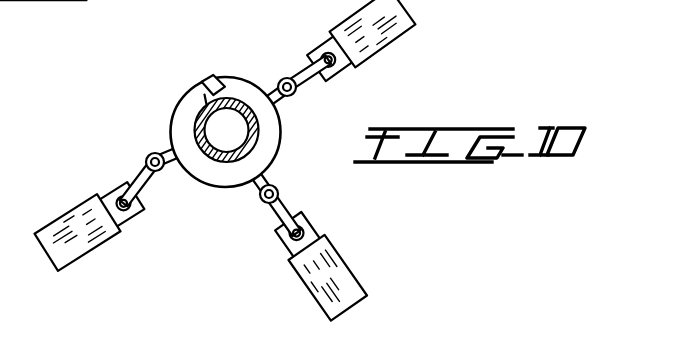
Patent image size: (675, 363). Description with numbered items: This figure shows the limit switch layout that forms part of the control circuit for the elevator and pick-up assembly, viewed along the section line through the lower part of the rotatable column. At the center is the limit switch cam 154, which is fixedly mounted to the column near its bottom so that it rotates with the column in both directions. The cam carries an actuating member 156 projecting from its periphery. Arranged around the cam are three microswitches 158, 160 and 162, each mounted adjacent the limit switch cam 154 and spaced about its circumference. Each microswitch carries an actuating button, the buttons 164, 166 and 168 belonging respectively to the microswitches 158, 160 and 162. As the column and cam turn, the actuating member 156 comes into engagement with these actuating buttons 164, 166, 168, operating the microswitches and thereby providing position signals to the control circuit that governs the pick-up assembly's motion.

The limit switch cam 154 is at (185, 94).
The actuating member 156 is at (168, 172).
The microswitch 158 is at (416, 22).
The microswitch 160 is at (355, 267).
The microswitch 162 is at (77, 258).
The actuating button 164 is at (293, 95).
The actuating button 166 is at (278, 187).
The actuating button 168 is at (161, 160).